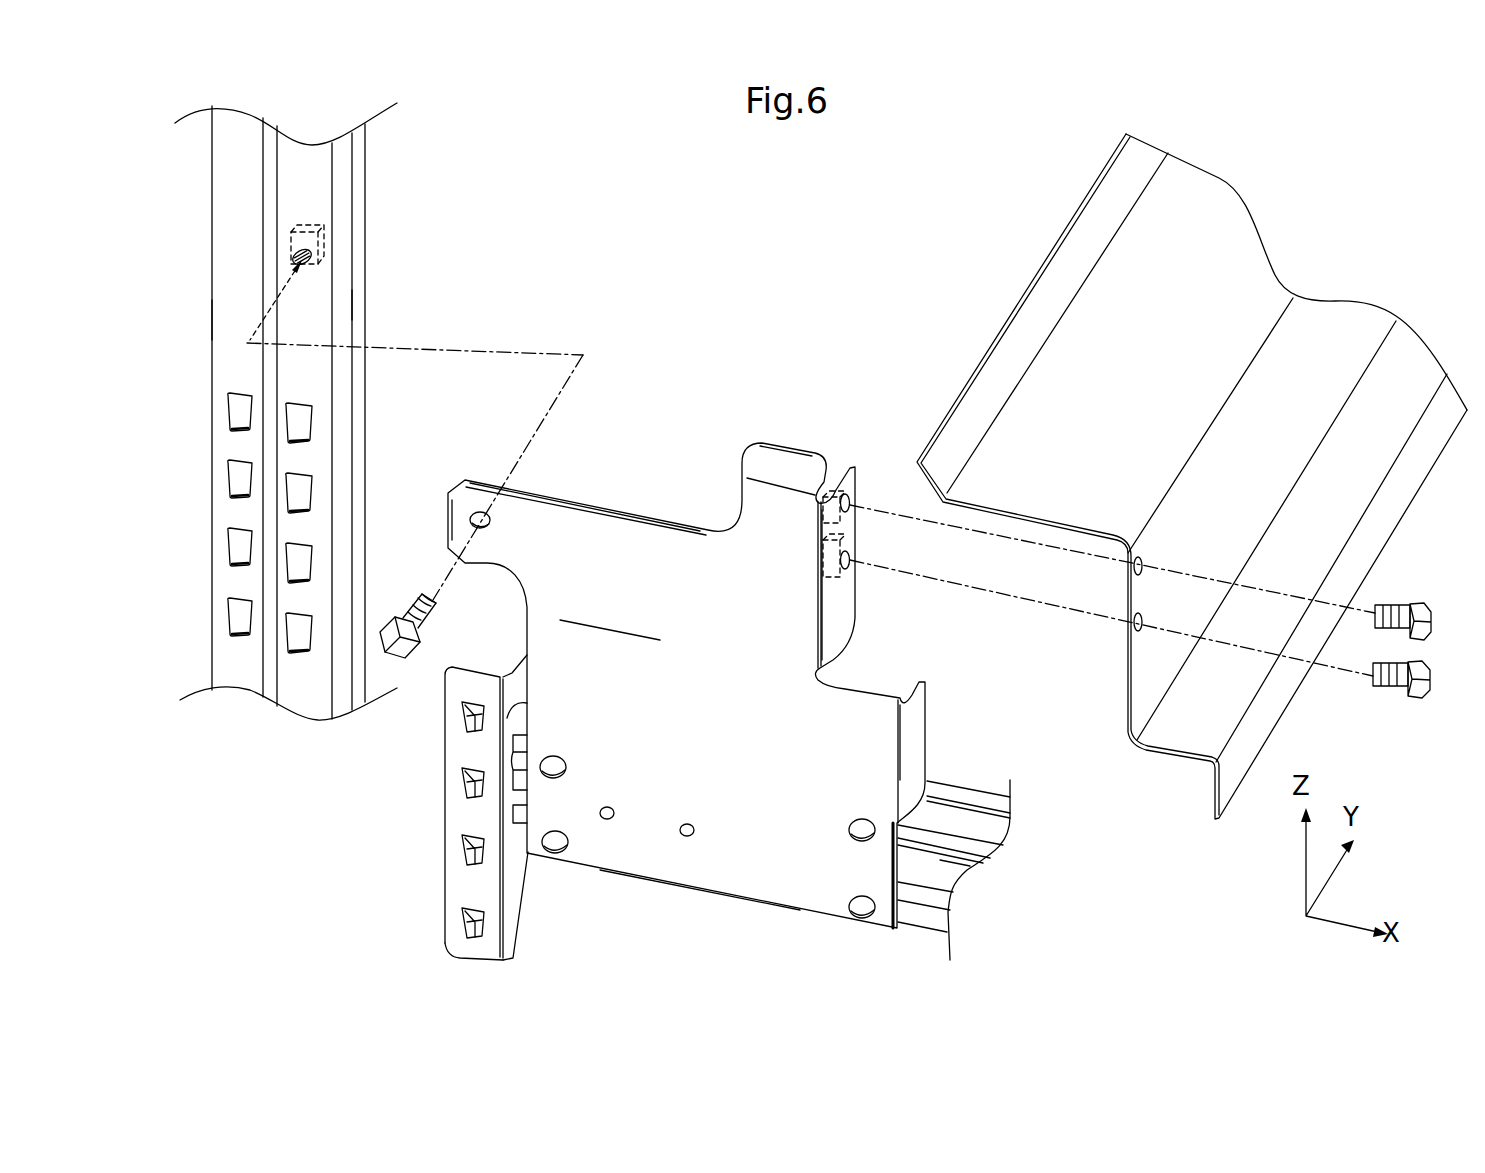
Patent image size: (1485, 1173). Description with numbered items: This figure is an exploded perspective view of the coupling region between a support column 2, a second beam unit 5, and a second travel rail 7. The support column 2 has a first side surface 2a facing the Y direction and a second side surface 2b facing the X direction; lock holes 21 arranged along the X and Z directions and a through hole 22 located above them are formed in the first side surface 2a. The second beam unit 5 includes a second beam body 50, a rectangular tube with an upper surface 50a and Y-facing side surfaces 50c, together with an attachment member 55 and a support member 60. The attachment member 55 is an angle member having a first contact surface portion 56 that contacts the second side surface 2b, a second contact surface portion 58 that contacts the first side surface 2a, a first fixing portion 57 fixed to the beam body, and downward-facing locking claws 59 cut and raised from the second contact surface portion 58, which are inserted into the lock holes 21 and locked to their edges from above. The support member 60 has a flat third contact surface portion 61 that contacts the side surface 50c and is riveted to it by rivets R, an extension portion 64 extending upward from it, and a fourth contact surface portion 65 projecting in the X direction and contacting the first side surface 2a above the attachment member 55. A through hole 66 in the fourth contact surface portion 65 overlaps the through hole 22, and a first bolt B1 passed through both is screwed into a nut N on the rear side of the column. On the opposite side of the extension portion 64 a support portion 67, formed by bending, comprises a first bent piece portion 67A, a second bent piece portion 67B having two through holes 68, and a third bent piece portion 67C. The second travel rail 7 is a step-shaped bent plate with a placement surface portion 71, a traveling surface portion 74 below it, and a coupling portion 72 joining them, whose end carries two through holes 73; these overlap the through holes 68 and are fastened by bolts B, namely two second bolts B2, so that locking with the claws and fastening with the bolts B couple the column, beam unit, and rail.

The support column 2 is at (264, 411).
The first side surface 2a is at (222, 326).
The second side surface 2b is at (345, 306).
The lock holes 21 is at (308, 490).
The through hole 22 is at (268, 236).
The nut N is at (320, 230).
The second beam unit 5 is at (712, 653).
The support member 60 is at (677, 525).
The extension portion 64 is at (690, 683).
The third contact surface portion 61 is at (727, 865).
The fourth contact surface portion 65 is at (456, 521).
The through hole 66 is at (480, 511).
The support portion 67 is at (905, 558).
The first bent piece portion 67A is at (778, 450).
The second bent piece portion 67B is at (835, 600).
The third bent piece portion 67C is at (912, 730).
The through holes 68 is at (852, 500).
The rivets R is at (558, 838).
The attachment member 55 is at (469, 813).
The first contact surface portion 56 is at (530, 910).
The first fixing portion 57 is at (512, 712).
The second contact surface portion 58 is at (456, 821).
The locking claws 59 is at (462, 712).
The second beam body 50 is at (1005, 839).
The upper surface 50a is at (995, 832).
The side surfaces 50c is at (915, 915).
The second travel rail 7 is at (1194, 476).
The placement surface portion 71 is at (1201, 205).
The coupling portion 72 is at (1265, 485).
The through holes 73 is at (1141, 560).
The traveling surface portion 74 is at (1413, 358).
The bolts B is at (922, 601).
The first bolt B1 is at (402, 626).
The second bolts B2 is at (1424, 663).